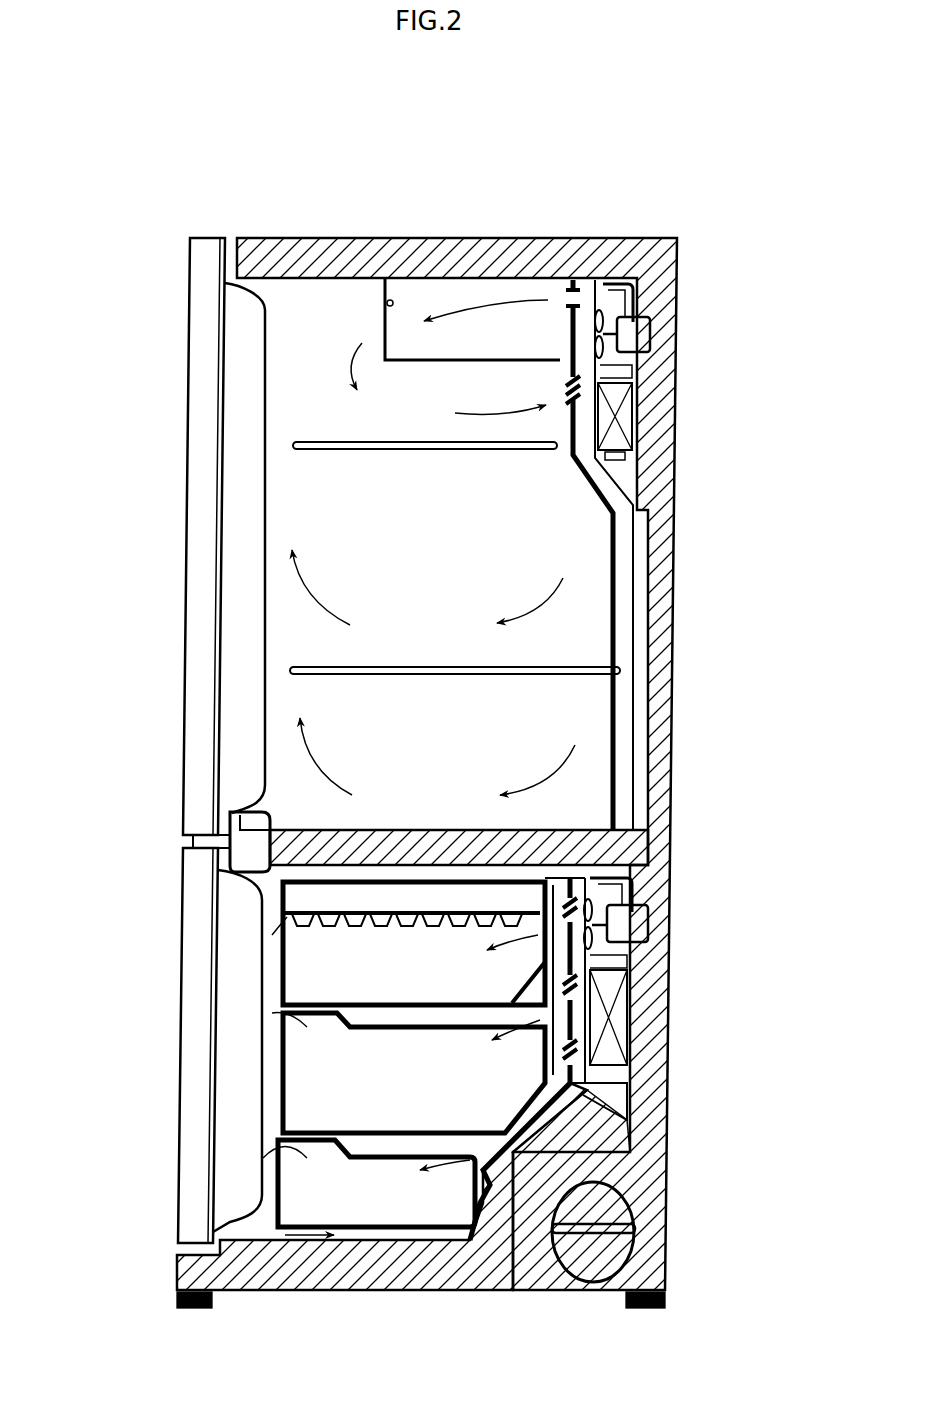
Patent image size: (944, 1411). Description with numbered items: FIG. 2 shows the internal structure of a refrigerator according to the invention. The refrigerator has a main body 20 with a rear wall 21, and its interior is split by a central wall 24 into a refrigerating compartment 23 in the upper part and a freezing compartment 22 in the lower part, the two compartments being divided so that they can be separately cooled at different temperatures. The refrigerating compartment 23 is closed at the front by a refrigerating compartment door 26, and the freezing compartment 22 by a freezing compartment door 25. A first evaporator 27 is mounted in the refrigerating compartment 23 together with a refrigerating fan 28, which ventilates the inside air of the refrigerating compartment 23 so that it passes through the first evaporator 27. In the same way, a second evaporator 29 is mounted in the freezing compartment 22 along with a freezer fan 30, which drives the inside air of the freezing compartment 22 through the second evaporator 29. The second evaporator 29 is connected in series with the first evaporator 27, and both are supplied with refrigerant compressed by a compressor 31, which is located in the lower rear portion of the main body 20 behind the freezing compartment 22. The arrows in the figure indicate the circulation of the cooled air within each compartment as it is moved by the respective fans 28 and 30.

The main body 20 is at (606, 236).
The rear wall 21 is at (668, 265).
The freezing compartment 22 is at (440, 1098).
The refrigerating compartment 23 is at (466, 562).
The central wall 24 is at (205, 812).
The freezing compartment door 25 is at (190, 970).
The refrigerating compartment door 26 is at (192, 700).
The first evaporator 27 is at (626, 421).
The refrigerating fan 28 is at (598, 359).
The second evaporator 29 is at (622, 1021).
The freezer fan 30 is at (593, 946).
The compressor 31 is at (632, 1212).